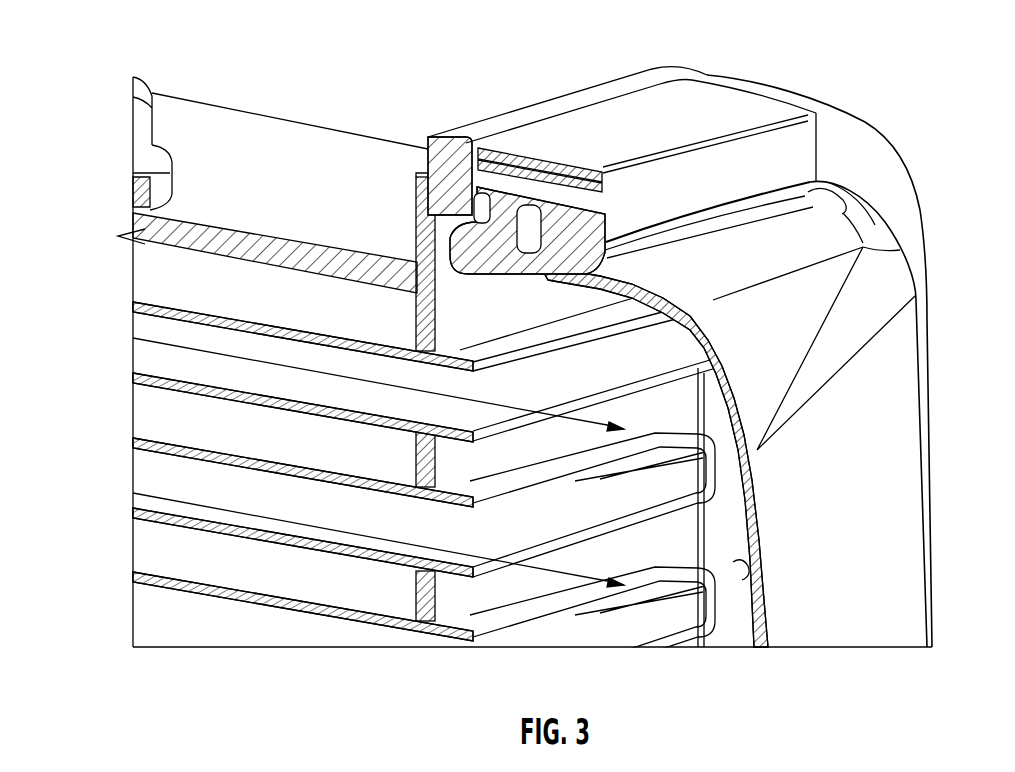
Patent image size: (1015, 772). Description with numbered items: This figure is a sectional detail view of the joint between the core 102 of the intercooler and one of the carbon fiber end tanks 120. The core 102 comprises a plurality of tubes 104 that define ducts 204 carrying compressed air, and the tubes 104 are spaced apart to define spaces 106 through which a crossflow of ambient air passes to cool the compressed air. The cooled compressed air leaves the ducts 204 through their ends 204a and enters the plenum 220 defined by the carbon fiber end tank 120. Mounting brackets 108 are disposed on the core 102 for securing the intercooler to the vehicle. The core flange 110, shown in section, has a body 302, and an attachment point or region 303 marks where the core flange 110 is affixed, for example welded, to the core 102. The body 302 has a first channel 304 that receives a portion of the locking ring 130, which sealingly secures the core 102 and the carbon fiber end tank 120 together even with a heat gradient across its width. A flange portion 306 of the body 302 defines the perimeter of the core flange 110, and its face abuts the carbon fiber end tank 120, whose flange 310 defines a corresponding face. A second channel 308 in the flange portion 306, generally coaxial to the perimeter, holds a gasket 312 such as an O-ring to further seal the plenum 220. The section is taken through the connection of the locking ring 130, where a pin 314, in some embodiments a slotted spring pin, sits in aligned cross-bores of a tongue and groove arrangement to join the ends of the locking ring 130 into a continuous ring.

The core 102 is at (287, 110).
The tubes 104 is at (316, 550).
The spaces 106 is at (182, 282).
The mounting brackets 108 is at (150, 128).
The core flange 110 is at (505, 111).
The carbon fiber end tank 120 is at (892, 518).
The locking ring 130 is at (914, 160).
The ducts 204 is at (185, 362).
The ends 204a is at (596, 386).
The plenum 220 is at (738, 568).
The body 302 is at (470, 240).
The attachment point or region 303 is at (418, 178).
The first channel 304 is at (480, 202).
The flange portion 306 is at (498, 248).
The second channel 308 is at (530, 210).
The flange 310 is at (578, 268).
The gasket 312 is at (556, 215).
The pin 314 is at (606, 182).